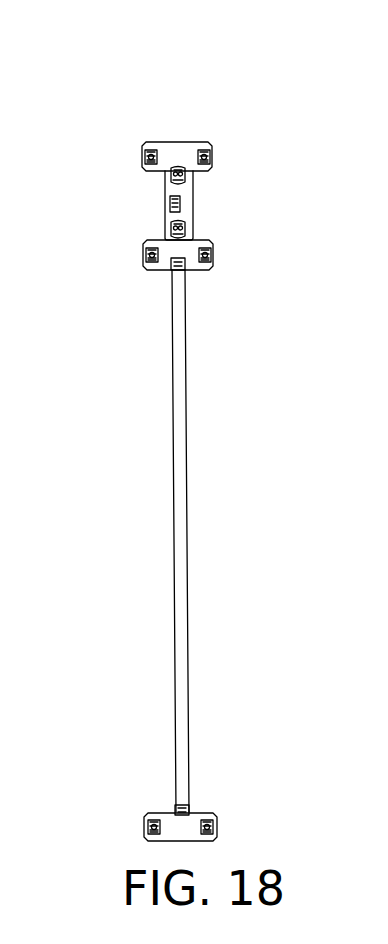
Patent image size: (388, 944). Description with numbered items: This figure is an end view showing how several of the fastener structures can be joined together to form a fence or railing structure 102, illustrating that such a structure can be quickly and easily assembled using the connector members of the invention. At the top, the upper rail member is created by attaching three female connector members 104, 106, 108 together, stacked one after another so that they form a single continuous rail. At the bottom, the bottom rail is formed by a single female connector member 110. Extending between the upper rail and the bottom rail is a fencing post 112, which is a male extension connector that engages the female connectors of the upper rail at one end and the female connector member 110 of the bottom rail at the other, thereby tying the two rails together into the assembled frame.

The fence or railing structure 102 is at (164, 132).
The female connector member 104 is at (177, 146).
The female connector member 106 is at (188, 207).
The female connector member 108 is at (193, 245).
The female connector member 110 is at (198, 817).
The fencing post 112 is at (183, 460).